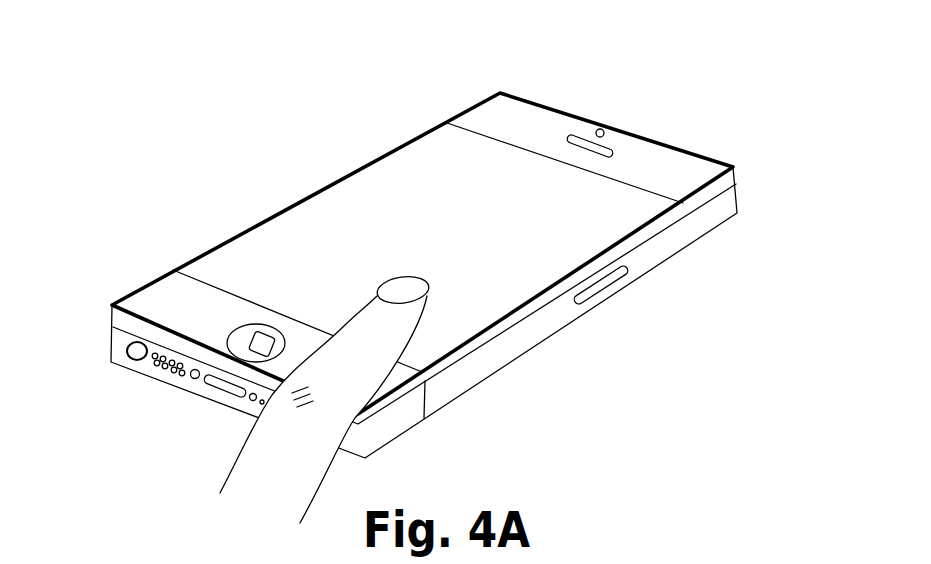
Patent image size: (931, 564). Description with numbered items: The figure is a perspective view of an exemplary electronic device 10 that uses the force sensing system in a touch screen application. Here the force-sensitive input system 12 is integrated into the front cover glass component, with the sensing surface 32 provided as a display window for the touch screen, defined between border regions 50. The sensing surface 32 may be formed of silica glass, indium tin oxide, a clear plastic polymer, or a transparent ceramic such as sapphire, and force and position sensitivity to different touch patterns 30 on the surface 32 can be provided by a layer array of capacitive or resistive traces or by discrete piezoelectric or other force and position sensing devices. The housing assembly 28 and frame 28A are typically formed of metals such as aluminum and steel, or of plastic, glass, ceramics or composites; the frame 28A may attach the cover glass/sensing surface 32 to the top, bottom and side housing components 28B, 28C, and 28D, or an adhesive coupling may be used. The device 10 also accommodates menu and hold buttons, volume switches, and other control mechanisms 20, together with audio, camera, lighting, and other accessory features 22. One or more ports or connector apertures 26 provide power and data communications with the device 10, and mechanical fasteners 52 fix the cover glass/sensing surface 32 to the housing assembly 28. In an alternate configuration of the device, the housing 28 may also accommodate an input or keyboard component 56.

The electronic device 10 is at (218, 68).
The force-sensitive input system 12 is at (275, 260).
The control mechanisms 20 is at (252, 338).
The accessory features 22 is at (603, 129).
The ports or connector apertures 26 is at (125, 358).
The housing assembly 28 is at (685, 288).
The frame 28A is at (508, 330).
The housing component 28B is at (718, 213).
The housing component 28C is at (355, 434).
The housing component 28D is at (453, 383).
The touch patterns 30 is at (392, 280).
The sensing surface 32 is at (355, 198).
The border regions 50 is at (512, 117).
The mechanical fasteners 52 is at (250, 400).
The keyboard component 56 is at (611, 294).